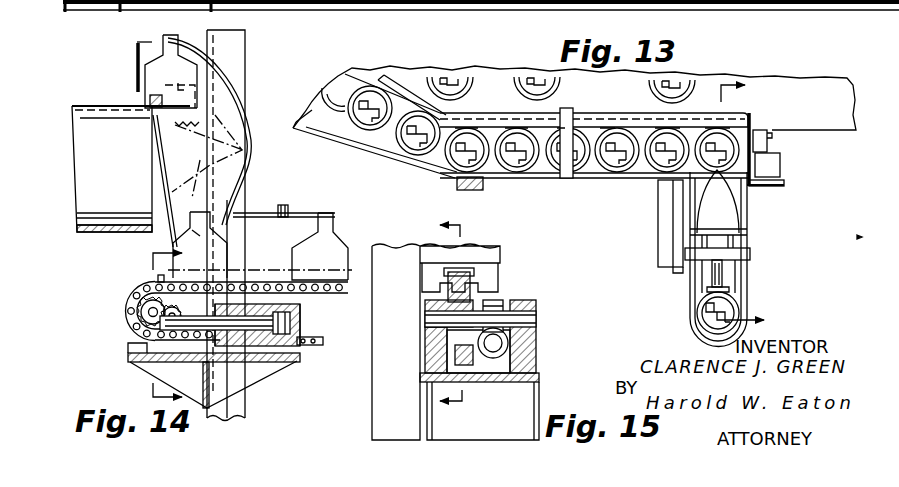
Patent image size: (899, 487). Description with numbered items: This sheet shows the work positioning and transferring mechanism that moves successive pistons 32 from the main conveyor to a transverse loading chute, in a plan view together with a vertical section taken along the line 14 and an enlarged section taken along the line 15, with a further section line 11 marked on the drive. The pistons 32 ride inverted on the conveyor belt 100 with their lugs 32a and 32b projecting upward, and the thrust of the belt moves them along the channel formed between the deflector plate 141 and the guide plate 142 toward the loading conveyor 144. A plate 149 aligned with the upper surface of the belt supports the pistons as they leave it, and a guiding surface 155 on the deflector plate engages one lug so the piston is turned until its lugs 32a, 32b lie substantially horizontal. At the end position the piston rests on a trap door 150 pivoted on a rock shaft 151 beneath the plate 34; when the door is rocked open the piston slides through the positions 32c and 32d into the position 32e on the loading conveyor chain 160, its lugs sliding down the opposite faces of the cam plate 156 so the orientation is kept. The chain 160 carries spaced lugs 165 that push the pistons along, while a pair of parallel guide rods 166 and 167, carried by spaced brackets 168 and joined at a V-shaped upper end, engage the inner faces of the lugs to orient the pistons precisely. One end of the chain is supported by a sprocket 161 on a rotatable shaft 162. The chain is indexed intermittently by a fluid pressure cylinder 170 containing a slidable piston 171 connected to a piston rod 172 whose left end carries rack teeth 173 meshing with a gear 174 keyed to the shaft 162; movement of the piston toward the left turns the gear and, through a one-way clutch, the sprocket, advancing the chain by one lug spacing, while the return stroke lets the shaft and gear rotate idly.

In FIG. 15, the section line 11- 11 is at (467, 317).
In FIG. 13, the section line 14— 14 is at (754, 192).
In FIG. 14, the section line 15— 15 is at (153, 325).
In FIG. 14, the piston 32 is at (150, 75).
In FIG. 13, the piston 32 is at (538, 80).
In FIG. 14, the lug 32a is at (152, 35).
In FIG. 13, the lug 32a is at (322, 120).
In FIG. 13, the lug 32b is at (431, 97).
In FIG. 14, the piston position 32c is at (229, 153).
In FIG. 14, the piston position 32d is at (229, 182).
In FIG. 14, the piston position 32e is at (197, 236).
In FIG. 13, the table plate 34 is at (827, 62).
In FIG. 13, the conveyor belt 100 is at (318, 108).
In FIG. 13, the deflector plate 141 is at (386, 70).
In FIG. 13, the guide plate 142 is at (366, 147).
In FIG. 14, the loading conveyor 144 is at (327, 298).
In FIG. 13, the loading conveyor 144 is at (692, 320).
In FIG. 14, the plate 149 is at (150, 113).
In FIG. 13, the plate 149 is at (591, 176).
In FIG. 14, the trap door 150 is at (161, 134).
In FIG. 13, the trap door 150 is at (737, 121).
In FIG. 13, the rock shaft 151 is at (755, 130).
In FIG. 13, the guiding surface 155 is at (588, 135).
In FIG. 14, the cam plate 156 is at (220, 63).
In FIG. 13, the cam plate 156 is at (718, 191).
In FIG. 14, the loading conveyor chain 160 is at (138, 302).
In FIG. 13, the loading conveyor chain 160 is at (723, 281).
In FIG. 14, the sprocket 161 is at (132, 332).
In FIG. 15, the sprocket 161 is at (445, 294).
In FIG. 14, the shaft 162 is at (127, 318).
In FIG. 15, the shaft 162 is at (432, 320).
In FIG. 14, the lug 165 is at (157, 280).
In FIG. 13, the guide rod 166 is at (702, 293).
In FIG. 14, the guide rod 167 is at (330, 214).
In FIG. 13, the guide rod 167 is at (741, 298).
In FIG. 14, the bracket 168 is at (289, 207).
In FIG. 13, the bracket 168 is at (751, 255).
In FIG. 14, the fluid pressure cylinder 170 is at (300, 341).
In FIG. 15, the fluid pressure cylinder 170 is at (506, 346).
In FIG. 13, the fluid pressure cylinder 170 is at (679, 223).
In FIG. 14, the piston 171 is at (284, 352).
In FIG. 14, the piston rod 172 is at (261, 350).
In FIG. 15, the piston rod 172 is at (496, 366).
In FIG. 14, the rack teeth 173 is at (204, 352).
In FIG. 15, the rack teeth 173 is at (533, 335).
In FIG. 14, the gear 174 is at (182, 313).
In FIG. 15, the gear 174 is at (500, 300).